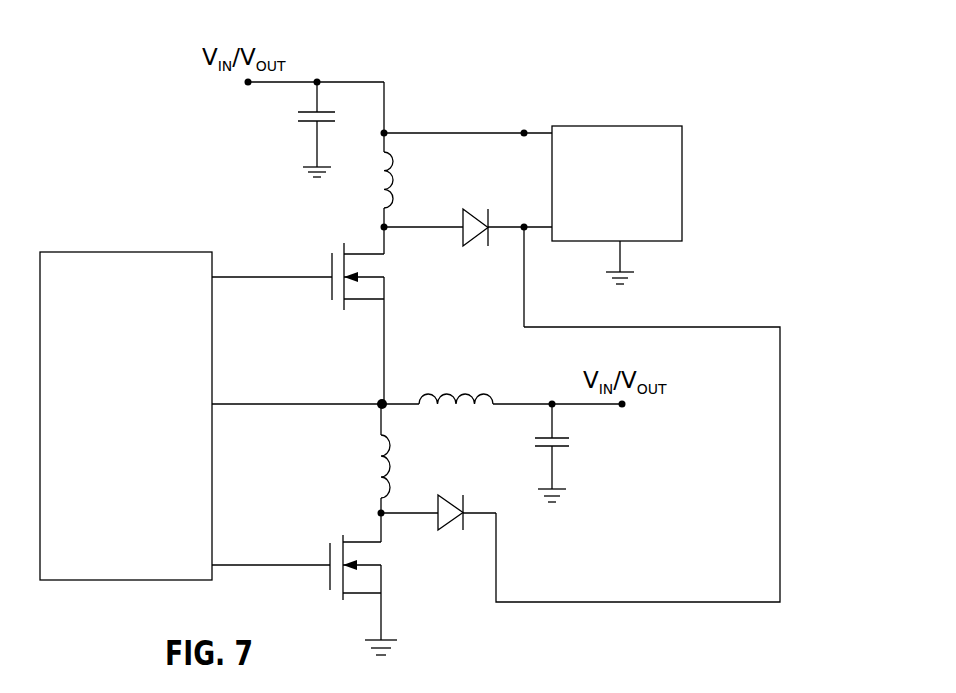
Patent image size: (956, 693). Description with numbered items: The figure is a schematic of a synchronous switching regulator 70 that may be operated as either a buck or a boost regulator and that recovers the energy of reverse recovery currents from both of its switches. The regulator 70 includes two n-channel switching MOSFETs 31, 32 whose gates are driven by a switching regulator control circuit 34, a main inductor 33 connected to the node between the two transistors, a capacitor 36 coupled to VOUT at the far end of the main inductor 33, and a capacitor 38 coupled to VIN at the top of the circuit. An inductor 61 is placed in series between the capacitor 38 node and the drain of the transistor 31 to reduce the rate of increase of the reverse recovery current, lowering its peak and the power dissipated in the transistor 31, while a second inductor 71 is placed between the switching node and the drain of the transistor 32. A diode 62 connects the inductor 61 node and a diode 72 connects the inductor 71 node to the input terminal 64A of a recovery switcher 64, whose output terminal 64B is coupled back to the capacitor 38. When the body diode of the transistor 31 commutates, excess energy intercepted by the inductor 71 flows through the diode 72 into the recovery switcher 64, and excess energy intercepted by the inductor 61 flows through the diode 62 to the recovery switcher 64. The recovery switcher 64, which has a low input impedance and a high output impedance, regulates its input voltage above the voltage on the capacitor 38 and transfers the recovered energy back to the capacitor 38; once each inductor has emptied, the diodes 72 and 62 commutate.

The switching MOSFET 31 is at (385, 276).
The switching MOSFET 32 is at (381, 578).
The main inductor 33 is at (433, 392).
The switching regulator control circuit 34 is at (120, 252).
The capacitor 36 is at (543, 447).
The capacitor 38 is at (322, 113).
The inductor 61 is at (392, 172).
The diode 62 is at (463, 247).
The recovery switcher 64 is at (682, 190).
The input terminal 64A is at (526, 218).
The output terminal 64B is at (524, 130).
The synchronous switching regulator 70 is at (600, 68).
The inductor 71 is at (388, 461).
The diode 72 is at (438, 492).